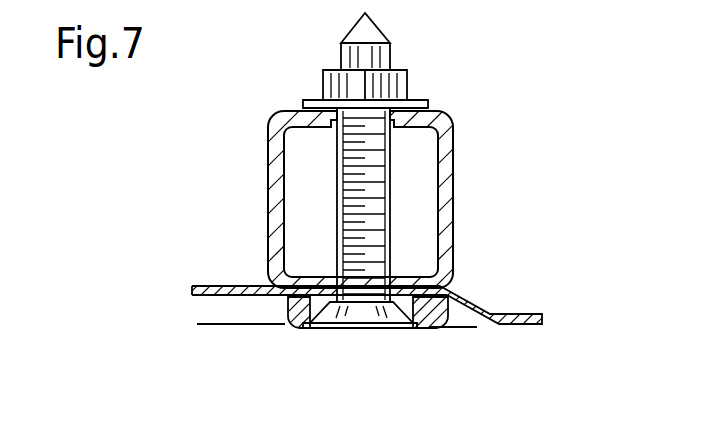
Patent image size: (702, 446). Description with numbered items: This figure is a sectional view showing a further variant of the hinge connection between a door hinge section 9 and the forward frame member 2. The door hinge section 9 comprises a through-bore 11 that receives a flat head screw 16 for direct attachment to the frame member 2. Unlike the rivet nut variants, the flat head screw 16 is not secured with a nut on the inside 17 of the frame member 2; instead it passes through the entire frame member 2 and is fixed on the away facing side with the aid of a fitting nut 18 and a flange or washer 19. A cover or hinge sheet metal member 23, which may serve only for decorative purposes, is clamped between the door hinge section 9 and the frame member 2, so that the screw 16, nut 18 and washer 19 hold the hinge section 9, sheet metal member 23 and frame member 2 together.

The frame member 2 is at (453, 193).
The door hinge section 9 is at (283, 328).
The through-bore 11 is at (298, 327).
The flat head screw 16 is at (390, 328).
The inside 17 is at (412, 238).
The fitting nut 18 is at (408, 78).
The flange or washer 19 is at (425, 104).
The hinge sheet metal member 23 is at (537, 327).